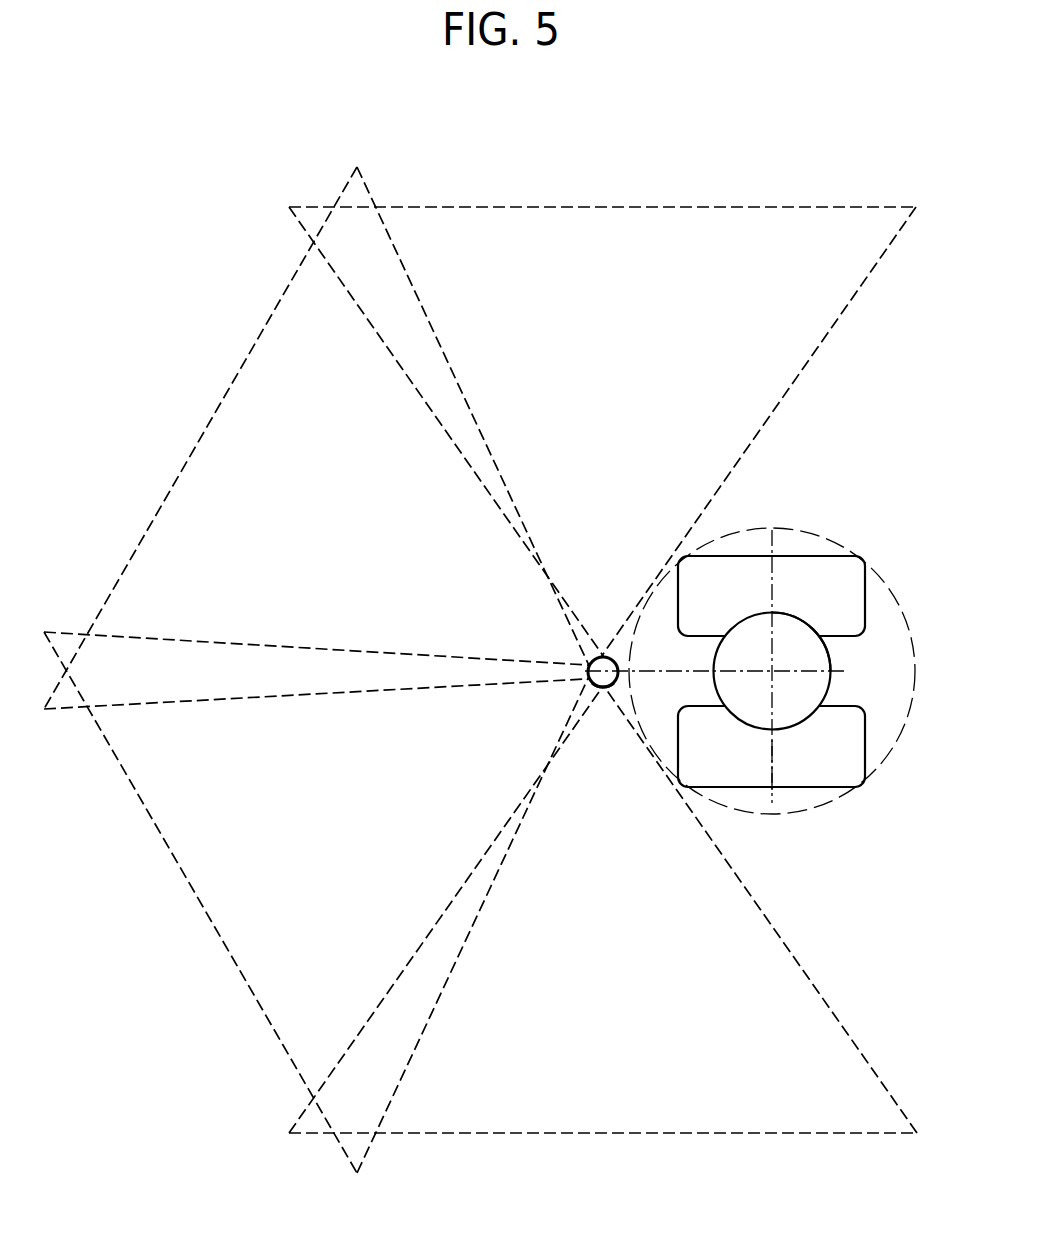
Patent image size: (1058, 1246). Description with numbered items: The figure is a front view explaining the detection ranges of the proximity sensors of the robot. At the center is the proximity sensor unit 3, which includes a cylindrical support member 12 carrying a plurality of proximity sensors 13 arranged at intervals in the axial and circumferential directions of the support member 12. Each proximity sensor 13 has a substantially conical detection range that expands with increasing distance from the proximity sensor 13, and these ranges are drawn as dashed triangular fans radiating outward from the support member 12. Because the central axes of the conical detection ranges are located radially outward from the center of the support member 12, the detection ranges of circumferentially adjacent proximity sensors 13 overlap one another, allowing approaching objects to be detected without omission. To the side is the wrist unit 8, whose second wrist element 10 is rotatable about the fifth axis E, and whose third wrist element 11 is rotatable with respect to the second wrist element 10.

The proximity sensor unit 3 is at (604, 628).
The wrist unit 8 is at (852, 689).
The second wrist element 10 is at (806, 556).
The third wrist element 11 is at (817, 652).
The support member 12 is at (593, 683).
The proximity sensors 13 is at (605, 688).
The fifth axis E is at (772, 761).